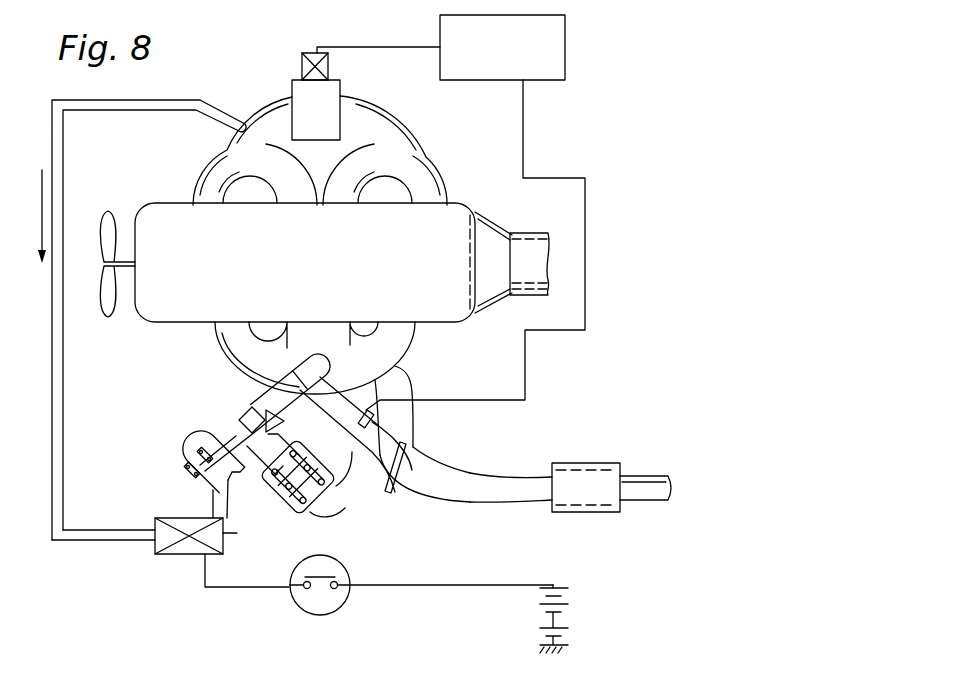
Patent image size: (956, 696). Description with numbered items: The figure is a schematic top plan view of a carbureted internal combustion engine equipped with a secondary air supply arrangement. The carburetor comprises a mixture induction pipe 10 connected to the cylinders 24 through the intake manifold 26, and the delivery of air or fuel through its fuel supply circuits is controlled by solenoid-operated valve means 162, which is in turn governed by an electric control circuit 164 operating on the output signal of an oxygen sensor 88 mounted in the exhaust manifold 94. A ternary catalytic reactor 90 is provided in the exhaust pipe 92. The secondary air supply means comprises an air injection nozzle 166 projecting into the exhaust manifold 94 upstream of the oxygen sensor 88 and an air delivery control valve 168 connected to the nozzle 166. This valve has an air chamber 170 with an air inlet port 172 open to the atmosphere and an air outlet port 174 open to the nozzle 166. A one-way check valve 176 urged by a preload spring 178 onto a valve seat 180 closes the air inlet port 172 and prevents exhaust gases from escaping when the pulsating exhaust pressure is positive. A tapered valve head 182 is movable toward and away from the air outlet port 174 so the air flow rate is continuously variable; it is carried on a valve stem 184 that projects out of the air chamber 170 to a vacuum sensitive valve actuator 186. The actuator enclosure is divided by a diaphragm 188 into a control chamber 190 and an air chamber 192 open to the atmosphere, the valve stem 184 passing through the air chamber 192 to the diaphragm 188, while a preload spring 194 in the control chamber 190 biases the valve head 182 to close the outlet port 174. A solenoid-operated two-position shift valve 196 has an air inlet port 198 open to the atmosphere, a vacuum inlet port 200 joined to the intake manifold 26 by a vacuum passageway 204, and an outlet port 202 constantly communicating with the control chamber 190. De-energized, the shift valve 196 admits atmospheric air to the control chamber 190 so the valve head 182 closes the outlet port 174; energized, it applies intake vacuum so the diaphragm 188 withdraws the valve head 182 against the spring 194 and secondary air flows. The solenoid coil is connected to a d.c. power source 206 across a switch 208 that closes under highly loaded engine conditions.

The mixture induction pipe 10 is at (328, 121).
The cylinders 24 is at (296, 267).
The intake manifold 26 is at (262, 107).
The oxygen sensor 88 is at (372, 428).
The catalytic reactor 90 is at (597, 463).
The exhaust pipe 92 is at (510, 475).
The exhaust manifold 94 is at (407, 445).
The solenoid-operated valve means 162 is at (303, 53).
The electric control circuit 164 is at (485, 82).
The air injection nozzle 166 is at (395, 368).
The air delivery control valve 168 is at (240, 402).
The air chamber 170 is at (247, 455).
The air inlet port 172 is at (327, 500).
The air outlet port 174 is at (407, 492).
The one-way check valve 176 is at (348, 518).
The preload spring 178 is at (288, 503).
The valve seat 180 is at (350, 500).
The valve head 182 is at (238, 404).
The valve stem 184 is at (240, 416).
The vacuum sensitive valve actuator 186 is at (190, 442).
The diaphragm 188 is at (192, 454).
The control chamber 190 is at (190, 472).
The air chamber 192 is at (187, 422).
The preload spring 194 is at (200, 488).
The solenoid-operated two-position shift valve 196 is at (174, 556).
The air inlet port 198 is at (240, 588).
The vacuum inlet port 200 is at (151, 533).
The outlet port 202 is at (236, 538).
The vacuum passageway 204 is at (65, 167).
The d.c. power source 206 is at (530, 618).
The switch 208 is at (346, 592).